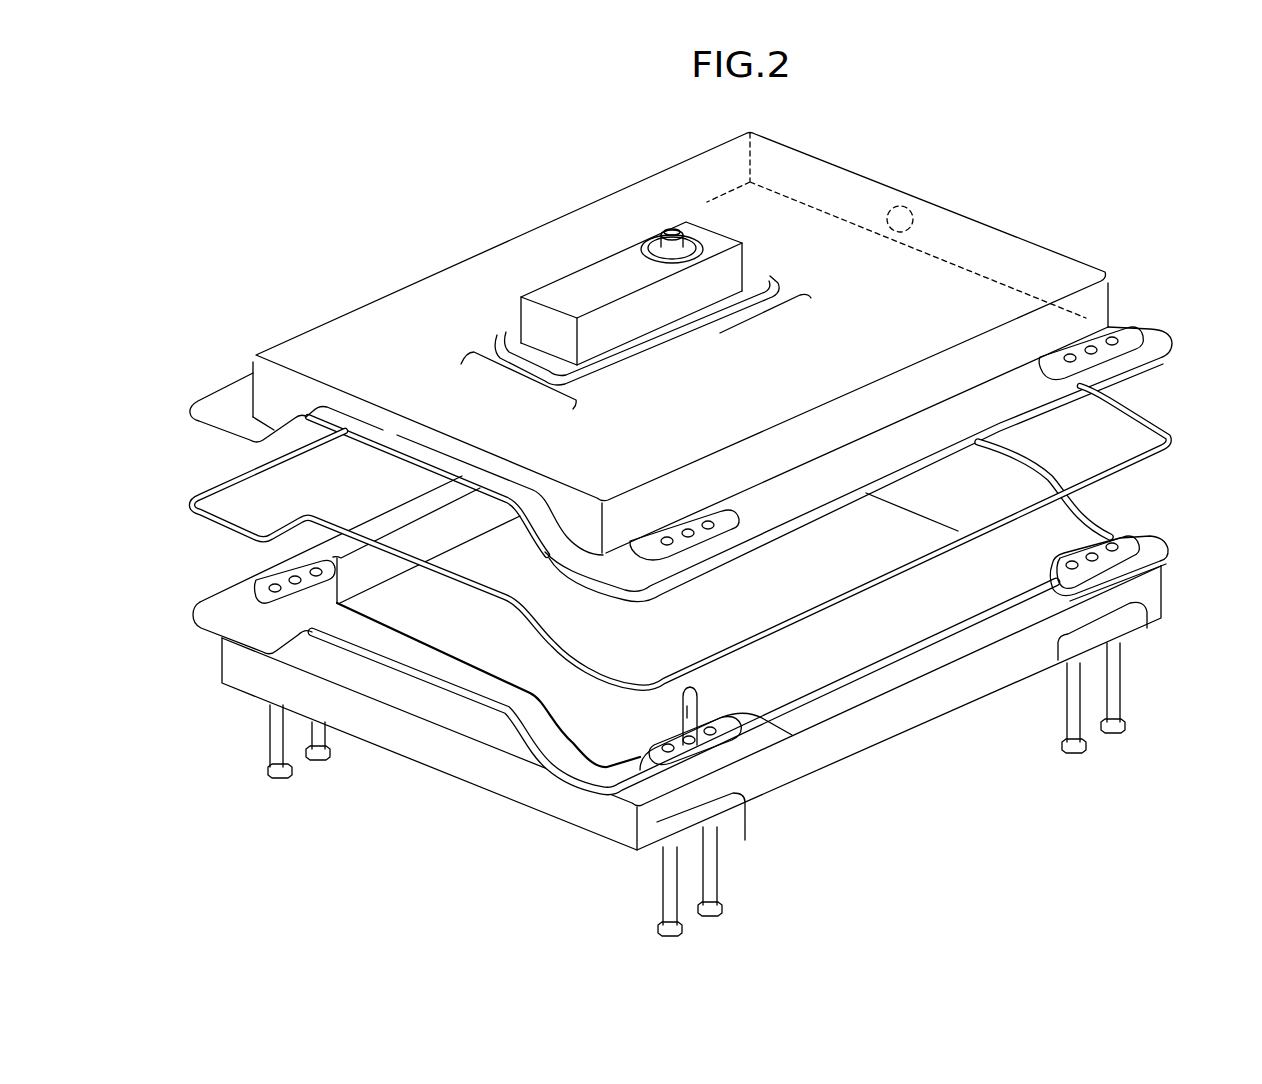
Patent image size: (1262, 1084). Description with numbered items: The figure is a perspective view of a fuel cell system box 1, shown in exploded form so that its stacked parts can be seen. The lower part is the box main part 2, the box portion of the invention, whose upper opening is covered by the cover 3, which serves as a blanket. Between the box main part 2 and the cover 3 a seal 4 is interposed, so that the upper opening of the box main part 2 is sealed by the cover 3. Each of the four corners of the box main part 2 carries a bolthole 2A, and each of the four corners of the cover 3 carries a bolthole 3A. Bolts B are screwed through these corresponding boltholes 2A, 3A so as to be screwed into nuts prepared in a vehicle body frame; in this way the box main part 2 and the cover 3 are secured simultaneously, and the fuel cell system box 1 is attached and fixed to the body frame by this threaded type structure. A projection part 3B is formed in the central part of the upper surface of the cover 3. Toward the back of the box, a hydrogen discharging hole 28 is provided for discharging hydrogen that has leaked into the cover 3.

The fuel cell system box 1 is at (1116, 225).
The box main part 2 is at (907, 710).
The bolthole 2A is at (314, 569).
The cover 3 is at (1017, 268).
The bolthole 3A is at (1071, 356).
The projection part 3B is at (585, 295).
The seal 4 is at (1130, 478).
The hydrogen discharging hole 28 is at (913, 206).
The bolt B is at (318, 761).